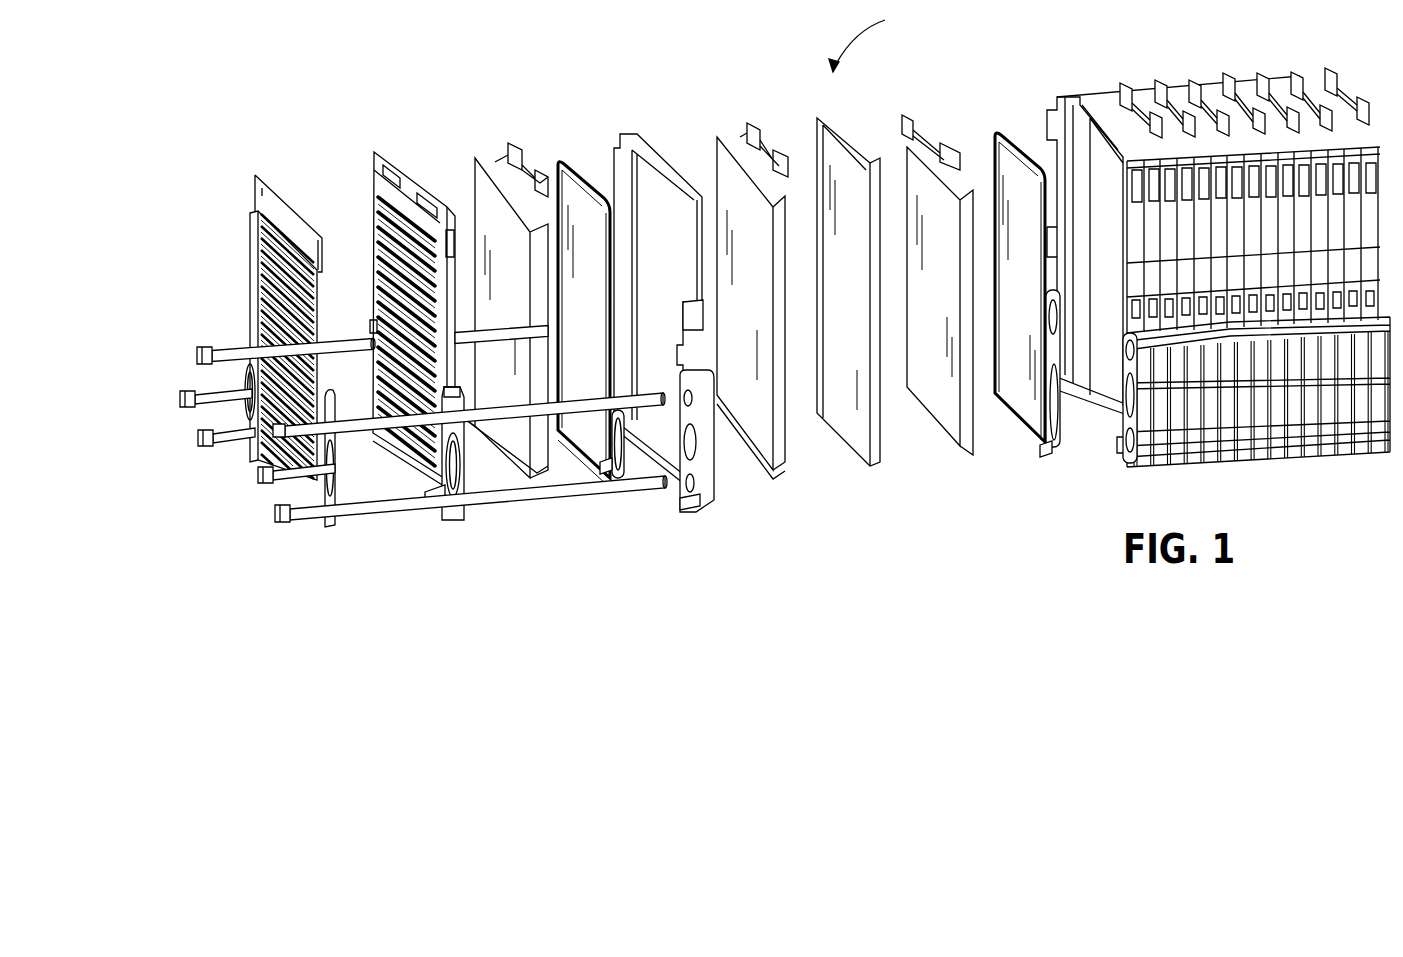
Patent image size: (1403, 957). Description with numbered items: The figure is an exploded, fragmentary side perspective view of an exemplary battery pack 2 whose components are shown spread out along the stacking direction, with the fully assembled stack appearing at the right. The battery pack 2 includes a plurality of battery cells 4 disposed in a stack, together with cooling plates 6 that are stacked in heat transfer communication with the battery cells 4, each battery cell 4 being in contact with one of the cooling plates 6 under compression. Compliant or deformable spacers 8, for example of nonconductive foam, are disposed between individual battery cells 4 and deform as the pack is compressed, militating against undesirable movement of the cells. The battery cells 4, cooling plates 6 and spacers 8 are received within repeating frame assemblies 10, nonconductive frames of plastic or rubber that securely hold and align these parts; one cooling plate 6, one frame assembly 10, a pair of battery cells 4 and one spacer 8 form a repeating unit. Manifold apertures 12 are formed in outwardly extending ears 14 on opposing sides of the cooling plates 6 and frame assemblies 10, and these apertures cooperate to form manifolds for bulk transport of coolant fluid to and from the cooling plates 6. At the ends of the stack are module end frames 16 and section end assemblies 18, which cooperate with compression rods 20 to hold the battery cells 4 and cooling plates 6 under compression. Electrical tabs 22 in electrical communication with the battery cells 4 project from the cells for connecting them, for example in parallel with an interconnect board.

The battery pack 2 is at (864, 36).
The battery cell 4 is at (470, 207).
The cooling plate 6 is at (583, 190).
The spacer 8 is at (883, 433).
The repeating frame assembly 10 is at (667, 160).
The manifold aperture 12 is at (440, 487).
The outwardly extending ear 14 is at (467, 470).
The module end frame 16 is at (377, 150).
The section end assembly 18 is at (262, 182).
The compression rod 20 is at (222, 340).
The electrical tab 22 is at (540, 170).